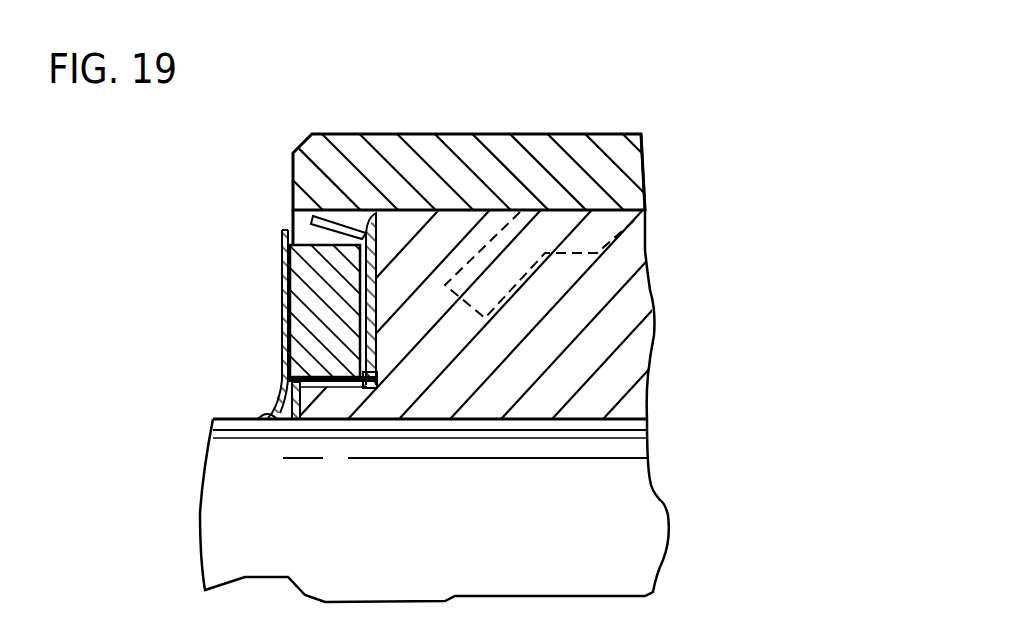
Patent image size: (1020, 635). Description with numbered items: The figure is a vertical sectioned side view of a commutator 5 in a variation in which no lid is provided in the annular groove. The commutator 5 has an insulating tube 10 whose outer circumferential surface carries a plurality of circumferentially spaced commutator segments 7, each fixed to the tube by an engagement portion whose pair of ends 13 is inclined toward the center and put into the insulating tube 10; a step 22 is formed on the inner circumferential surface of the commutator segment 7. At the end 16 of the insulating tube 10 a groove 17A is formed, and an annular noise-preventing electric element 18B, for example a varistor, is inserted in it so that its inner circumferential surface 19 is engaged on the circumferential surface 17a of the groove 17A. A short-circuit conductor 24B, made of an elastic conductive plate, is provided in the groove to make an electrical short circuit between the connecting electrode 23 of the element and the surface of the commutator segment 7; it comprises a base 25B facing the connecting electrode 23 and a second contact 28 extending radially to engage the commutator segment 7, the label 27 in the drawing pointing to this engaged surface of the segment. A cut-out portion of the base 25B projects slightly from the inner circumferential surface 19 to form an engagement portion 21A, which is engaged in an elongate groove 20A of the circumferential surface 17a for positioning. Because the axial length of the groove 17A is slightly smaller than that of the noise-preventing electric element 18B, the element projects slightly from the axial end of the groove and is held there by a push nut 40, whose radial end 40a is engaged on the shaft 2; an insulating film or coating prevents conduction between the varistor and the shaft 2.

The shaft 2 is at (650, 528).
The commutator 5 is at (659, 268).
The commutator segment 7 is at (627, 165).
The insulating tube 10 is at (603, 378).
The end of the engagement portion 13 is at (507, 292).
The end of the insulating tube 16 is at (292, 153).
The groove 17A is at (290, 340).
The circumferential surface of the groove 17a is at (340, 364).
The noise-preventing electric element 18B is at (288, 288).
The inner circumferential surface of the noise-preventing electric element 19 is at (320, 382).
The elongate groove 20A is at (325, 380).
The engagement portion 21A is at (358, 380).
The step 22 is at (309, 218).
The connecting electrode 23 is at (380, 234).
The short-circuit conductor 24B is at (347, 212).
The sliding surface (7a) 27 is at (370, 212).
The base 25B is at (385, 301).
The second contact 28 is at (325, 210).
The push nut 40 is at (280, 245).
The radial end of the push nut 40a is at (262, 419).